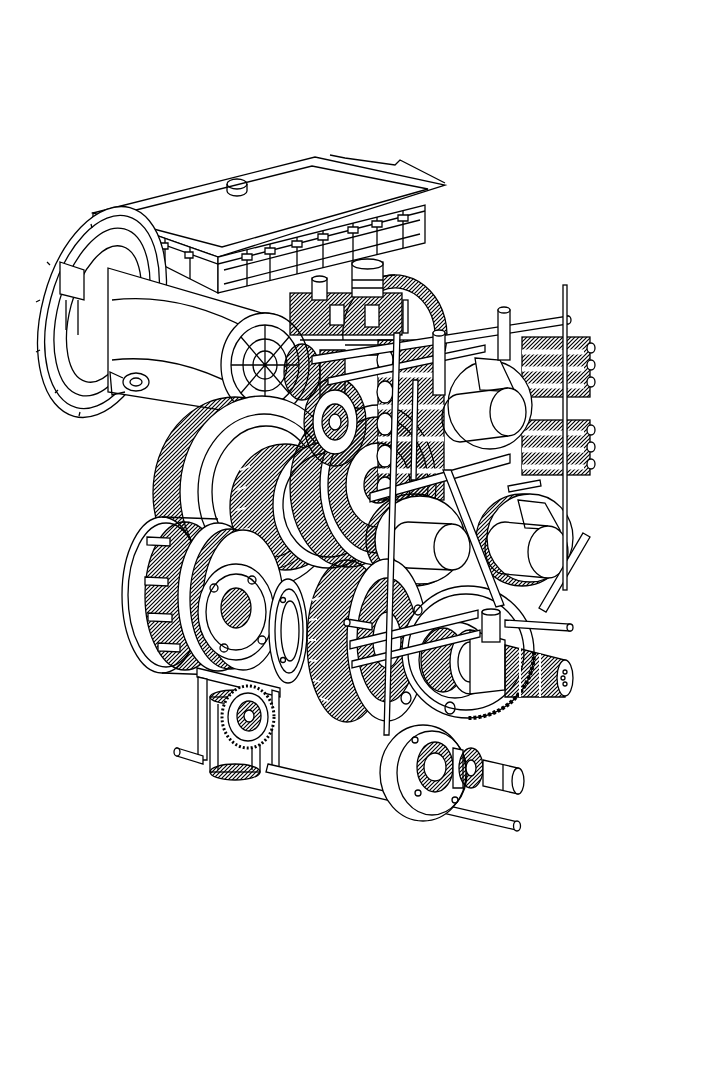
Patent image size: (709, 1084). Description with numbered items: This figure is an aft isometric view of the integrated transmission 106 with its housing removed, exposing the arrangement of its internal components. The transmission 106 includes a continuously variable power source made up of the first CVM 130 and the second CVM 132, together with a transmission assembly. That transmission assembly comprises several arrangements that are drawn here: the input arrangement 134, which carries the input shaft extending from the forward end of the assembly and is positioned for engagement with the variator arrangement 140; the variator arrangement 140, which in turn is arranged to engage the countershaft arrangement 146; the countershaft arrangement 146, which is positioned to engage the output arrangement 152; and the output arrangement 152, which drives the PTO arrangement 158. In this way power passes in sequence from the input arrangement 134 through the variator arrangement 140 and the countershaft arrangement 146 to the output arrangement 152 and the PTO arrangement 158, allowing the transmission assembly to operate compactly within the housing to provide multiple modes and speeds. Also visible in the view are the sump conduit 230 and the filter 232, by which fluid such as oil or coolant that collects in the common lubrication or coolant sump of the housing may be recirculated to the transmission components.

The transmission 106 is at (188, 153).
The first CVM 130 is at (428, 273).
The second CVM 132 is at (147, 380).
The input arrangement 134 is at (475, 308).
The variator arrangement 140 is at (190, 493).
The countershaft arrangement 146 is at (583, 521).
The output arrangement 152 is at (314, 696).
The PTO arrangement 158 is at (449, 838).
The sump conduit 230 is at (330, 787).
The filter 232 is at (220, 762).